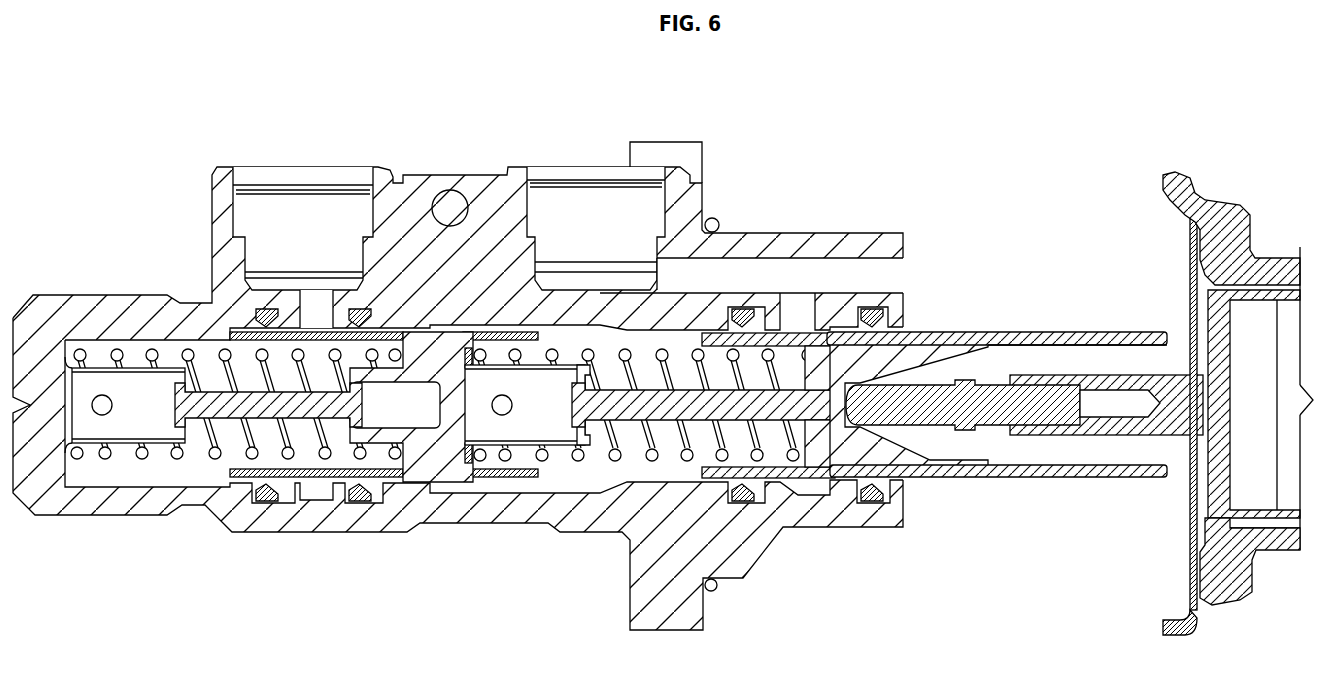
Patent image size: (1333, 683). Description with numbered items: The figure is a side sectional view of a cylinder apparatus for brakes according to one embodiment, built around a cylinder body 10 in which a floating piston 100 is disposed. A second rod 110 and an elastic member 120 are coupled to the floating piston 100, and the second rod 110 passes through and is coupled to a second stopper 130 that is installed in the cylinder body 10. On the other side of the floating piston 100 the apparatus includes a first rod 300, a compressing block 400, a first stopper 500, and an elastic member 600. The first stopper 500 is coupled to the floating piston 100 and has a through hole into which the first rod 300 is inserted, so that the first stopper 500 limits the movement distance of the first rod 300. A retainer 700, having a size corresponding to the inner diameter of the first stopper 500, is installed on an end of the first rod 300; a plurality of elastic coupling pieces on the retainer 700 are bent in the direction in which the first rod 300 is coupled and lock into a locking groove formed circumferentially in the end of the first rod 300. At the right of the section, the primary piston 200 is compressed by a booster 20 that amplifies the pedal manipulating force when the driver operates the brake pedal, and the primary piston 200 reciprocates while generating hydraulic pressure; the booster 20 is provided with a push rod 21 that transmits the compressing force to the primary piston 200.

The cylinder body 10 is at (497, 205).
The booster 20 is at (1237, 572).
The push rod 21 is at (953, 410).
The floating piston 100 is at (428, 462).
The second rod 110 is at (297, 470).
The elastic member 120 is at (208, 463).
The second stopper 130 is at (128, 443).
The primary piston 200 is at (1053, 470).
The first rod 300 is at (762, 402).
The compressing block 400 is at (853, 443).
The first stopper 500 is at (527, 443).
The elastic member 600 is at (687, 457).
The retainer 700 is at (575, 425).